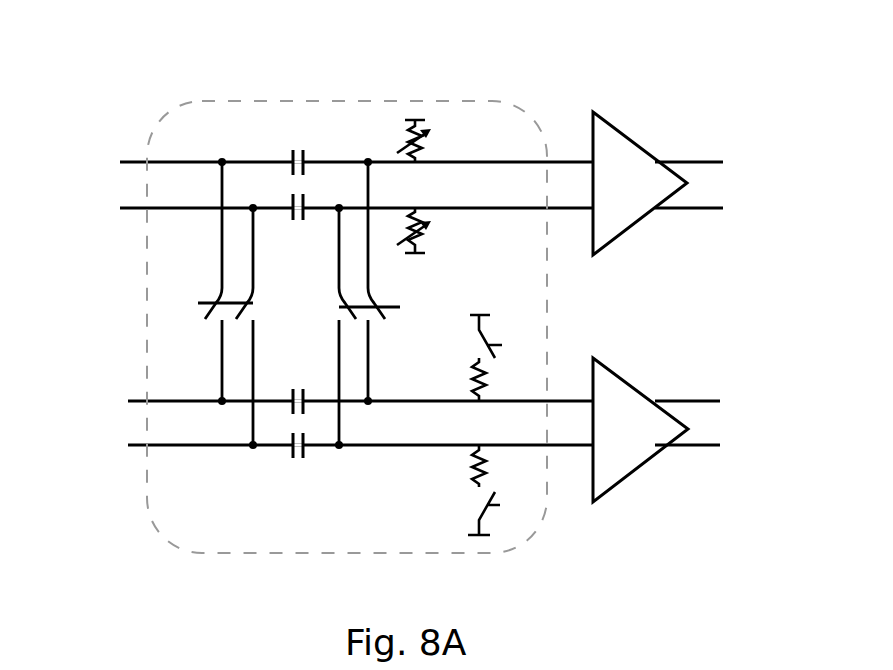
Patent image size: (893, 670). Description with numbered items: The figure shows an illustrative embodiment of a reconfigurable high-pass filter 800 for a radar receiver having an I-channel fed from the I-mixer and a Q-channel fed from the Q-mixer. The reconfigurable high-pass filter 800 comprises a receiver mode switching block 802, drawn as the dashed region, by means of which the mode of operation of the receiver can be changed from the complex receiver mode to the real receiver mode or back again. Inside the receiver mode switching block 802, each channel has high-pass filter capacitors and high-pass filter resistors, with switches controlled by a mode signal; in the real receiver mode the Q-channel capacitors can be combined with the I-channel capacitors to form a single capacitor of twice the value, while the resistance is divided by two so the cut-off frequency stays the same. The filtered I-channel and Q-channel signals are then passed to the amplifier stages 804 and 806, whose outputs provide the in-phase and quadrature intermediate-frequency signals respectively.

The reconfigurable high-pass filter 800 is at (178, 58).
The receiver mode switching block 802 is at (322, 100).
The I-channel IF amplifier 804 is at (645, 148).
The Q-channel IF amplifier 806 is at (640, 392).